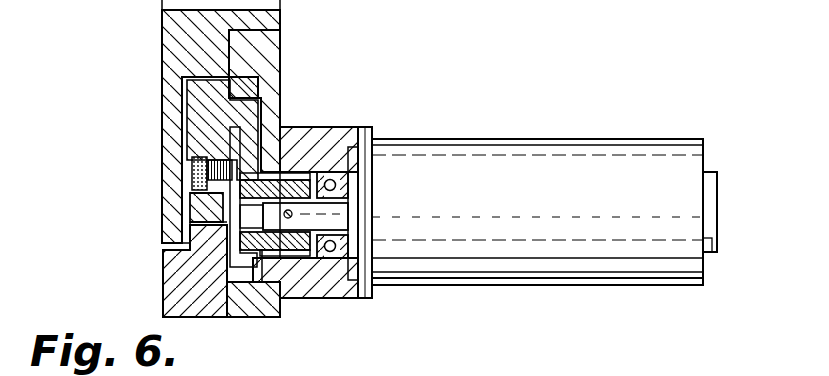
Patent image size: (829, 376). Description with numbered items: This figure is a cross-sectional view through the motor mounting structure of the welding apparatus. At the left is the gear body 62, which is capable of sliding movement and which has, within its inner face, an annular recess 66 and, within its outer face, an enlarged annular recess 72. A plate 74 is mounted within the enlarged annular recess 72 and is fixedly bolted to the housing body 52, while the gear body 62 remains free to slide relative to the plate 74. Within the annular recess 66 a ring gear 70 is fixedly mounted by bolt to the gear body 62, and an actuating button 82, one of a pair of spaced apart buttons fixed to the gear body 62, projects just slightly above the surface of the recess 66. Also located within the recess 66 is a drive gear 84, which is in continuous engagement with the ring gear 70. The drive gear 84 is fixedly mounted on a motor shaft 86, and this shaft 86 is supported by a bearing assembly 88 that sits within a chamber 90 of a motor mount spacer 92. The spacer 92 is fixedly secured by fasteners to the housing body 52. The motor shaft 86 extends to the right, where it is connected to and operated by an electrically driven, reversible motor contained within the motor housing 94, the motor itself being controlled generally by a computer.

The housing body 52 is at (268, 60).
The gear body 62 is at (172, 265).
The annular recess 66 is at (166, 283).
The ring gear 70 is at (233, 117).
The enlarged annular recess 72 is at (192, 200).
The plate 74 is at (165, 44).
The actuating button 82 is at (229, 130).
The drive gear 84 is at (299, 188).
The motor shaft 86 is at (360, 178).
The bearing assembly 88 is at (334, 260).
The chamber 90 is at (295, 255).
The motor mount spacer 92 is at (301, 155).
The motor housing 94 is at (543, 162).